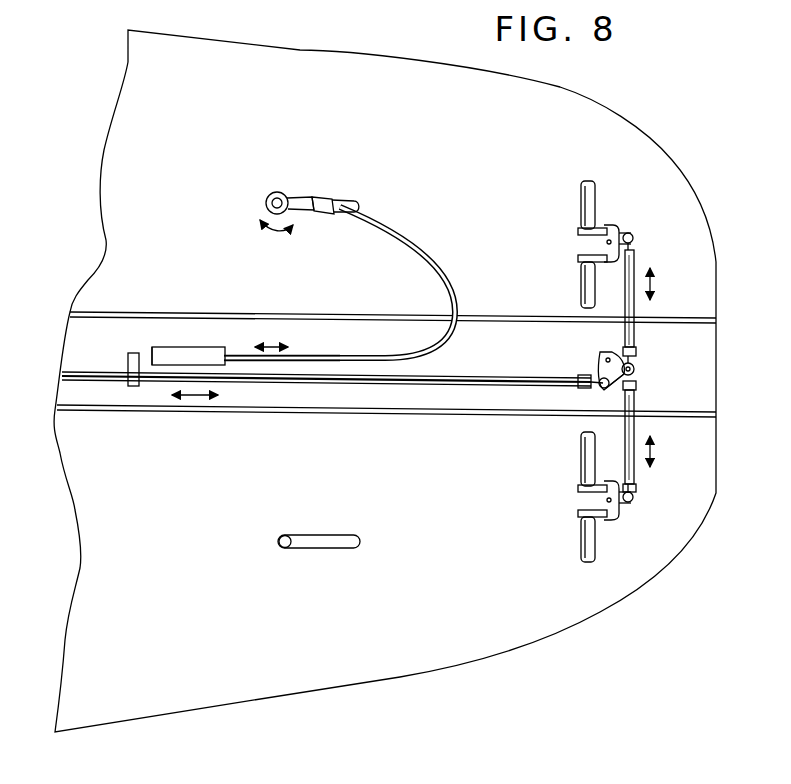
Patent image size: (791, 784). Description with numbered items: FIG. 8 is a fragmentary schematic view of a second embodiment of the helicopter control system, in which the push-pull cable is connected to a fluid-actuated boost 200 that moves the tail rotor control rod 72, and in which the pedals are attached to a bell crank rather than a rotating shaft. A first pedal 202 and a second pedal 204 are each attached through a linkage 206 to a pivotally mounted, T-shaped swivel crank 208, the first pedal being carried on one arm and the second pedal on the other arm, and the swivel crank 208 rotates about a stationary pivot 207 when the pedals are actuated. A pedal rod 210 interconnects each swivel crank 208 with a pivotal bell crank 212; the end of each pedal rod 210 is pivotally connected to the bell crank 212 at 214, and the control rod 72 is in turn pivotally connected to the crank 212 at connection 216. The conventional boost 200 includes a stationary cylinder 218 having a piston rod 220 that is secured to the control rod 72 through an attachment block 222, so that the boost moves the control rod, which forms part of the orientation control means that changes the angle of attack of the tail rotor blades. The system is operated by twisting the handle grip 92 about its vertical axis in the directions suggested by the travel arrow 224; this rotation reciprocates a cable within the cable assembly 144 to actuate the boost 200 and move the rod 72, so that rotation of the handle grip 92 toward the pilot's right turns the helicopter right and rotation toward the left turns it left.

The control rod 72 is at (472, 375).
The handle grip 92 is at (266, 201).
The cable assembly 144 is at (434, 263).
The fluid-actuated boost 200 is at (179, 340).
The first pedal 202 is at (593, 192).
The second pedal 204 is at (582, 268).
The linkage 206 is at (605, 232).
The stationary pivot 207 is at (607, 242).
The swivel crank 208 is at (631, 235).
The pedal rod 210 is at (636, 312).
The bell crank 212 is at (604, 356).
The pivotal connection 214 is at (634, 367).
The connection 216 is at (600, 388).
The stationary cylinder 218 is at (212, 348).
The piston rod 220 is at (150, 348).
The attachment block 222 is at (128, 362).
The travel arrow 224 is at (280, 232).